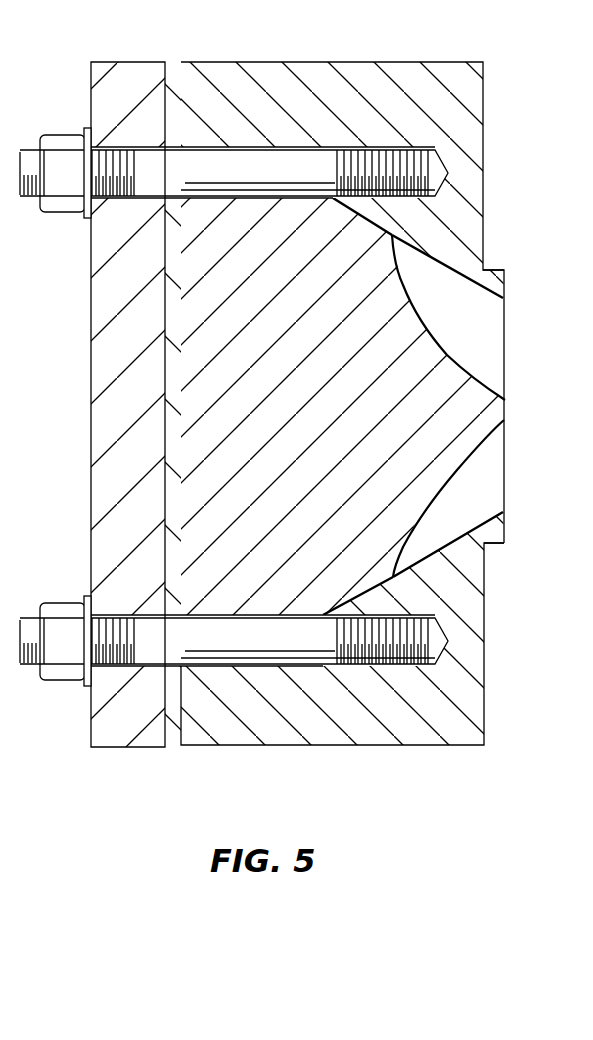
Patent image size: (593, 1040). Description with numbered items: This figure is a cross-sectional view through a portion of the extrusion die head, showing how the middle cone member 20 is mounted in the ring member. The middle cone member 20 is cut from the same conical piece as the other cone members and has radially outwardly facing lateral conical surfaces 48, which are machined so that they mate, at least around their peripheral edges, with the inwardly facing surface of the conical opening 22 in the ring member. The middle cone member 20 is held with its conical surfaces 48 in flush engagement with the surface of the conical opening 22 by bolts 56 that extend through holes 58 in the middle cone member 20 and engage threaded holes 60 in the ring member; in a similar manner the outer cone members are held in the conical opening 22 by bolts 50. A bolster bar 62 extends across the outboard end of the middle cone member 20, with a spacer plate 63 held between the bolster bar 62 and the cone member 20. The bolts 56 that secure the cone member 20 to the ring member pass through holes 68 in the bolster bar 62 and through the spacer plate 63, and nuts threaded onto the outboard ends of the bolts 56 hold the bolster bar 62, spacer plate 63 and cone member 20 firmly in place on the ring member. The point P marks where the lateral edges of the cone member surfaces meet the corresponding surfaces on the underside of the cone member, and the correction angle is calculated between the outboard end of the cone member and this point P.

The middle cone member 20 is at (455, 380).
The conical opening 22 is at (450, 279).
The conical surface 48 is at (383, 224).
The bolts 50 is at (437, 641).
The bolts 56 is at (304, 157).
The holes 58 is at (243, 150).
The threaded holes 60 is at (441, 151).
The bolster bar 62 is at (103, 419).
The spacer plate 63 is at (168, 467).
The holes 68 is at (147, 152).
The point P is at (395, 233).